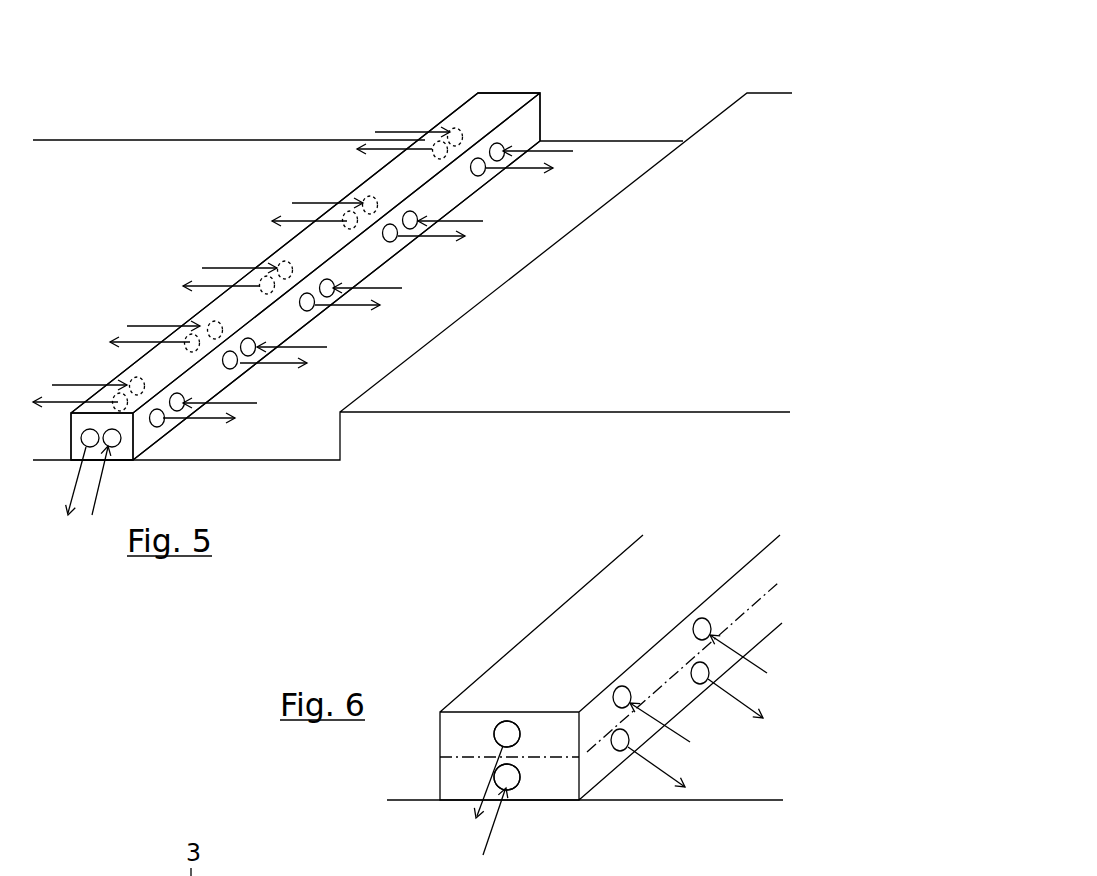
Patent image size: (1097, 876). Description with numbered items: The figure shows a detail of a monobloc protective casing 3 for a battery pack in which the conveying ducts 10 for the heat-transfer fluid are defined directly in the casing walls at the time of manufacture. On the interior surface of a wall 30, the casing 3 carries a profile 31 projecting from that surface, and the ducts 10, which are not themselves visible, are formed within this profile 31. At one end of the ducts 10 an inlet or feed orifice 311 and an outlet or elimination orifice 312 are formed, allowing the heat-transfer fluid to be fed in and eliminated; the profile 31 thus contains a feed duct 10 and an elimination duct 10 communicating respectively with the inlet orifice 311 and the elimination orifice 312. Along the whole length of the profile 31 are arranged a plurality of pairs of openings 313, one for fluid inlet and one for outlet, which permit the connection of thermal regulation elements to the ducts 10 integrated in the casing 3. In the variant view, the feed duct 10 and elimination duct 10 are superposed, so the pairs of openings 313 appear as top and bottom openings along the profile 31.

In FIG. 5, the protective casing 3 is at (82, 130).
In FIG. 6, the protective casing 3 is at (545, 605).
In FIG. 5, the wall 30 is at (198, 165).
In FIG. 5, the profile 31 is at (522, 126).
In FIG. 5, the inlet orifice 311 is at (118, 445).
In FIG. 6, the inlet orifice 311 is at (513, 790).
In FIG. 5, the outlet orifice 312 is at (84, 434).
In FIG. 6, the outlet orifice 312 is at (498, 722).
In FIG. 5, the openings 313 is at (405, 220).
In FIG. 6, the openings 313 is at (710, 628).
In FIG. 6, the conveying ducts 10 is at (494, 731).